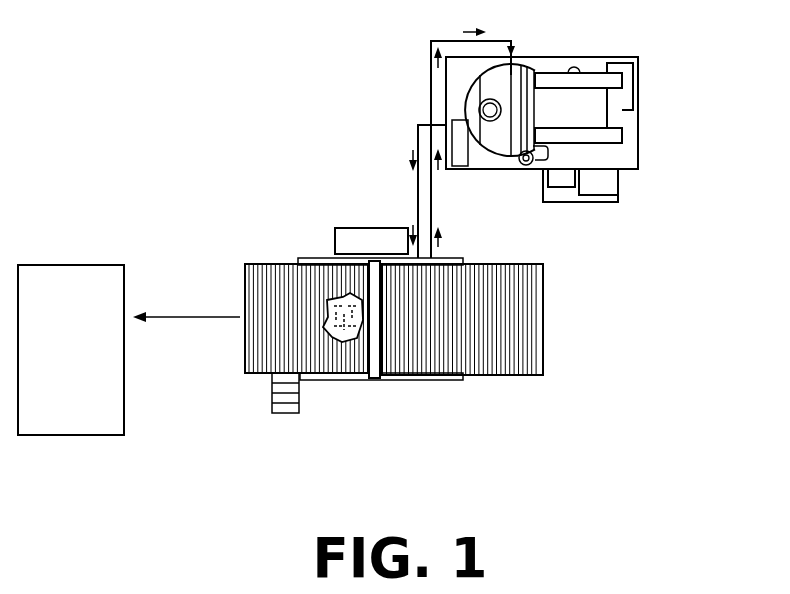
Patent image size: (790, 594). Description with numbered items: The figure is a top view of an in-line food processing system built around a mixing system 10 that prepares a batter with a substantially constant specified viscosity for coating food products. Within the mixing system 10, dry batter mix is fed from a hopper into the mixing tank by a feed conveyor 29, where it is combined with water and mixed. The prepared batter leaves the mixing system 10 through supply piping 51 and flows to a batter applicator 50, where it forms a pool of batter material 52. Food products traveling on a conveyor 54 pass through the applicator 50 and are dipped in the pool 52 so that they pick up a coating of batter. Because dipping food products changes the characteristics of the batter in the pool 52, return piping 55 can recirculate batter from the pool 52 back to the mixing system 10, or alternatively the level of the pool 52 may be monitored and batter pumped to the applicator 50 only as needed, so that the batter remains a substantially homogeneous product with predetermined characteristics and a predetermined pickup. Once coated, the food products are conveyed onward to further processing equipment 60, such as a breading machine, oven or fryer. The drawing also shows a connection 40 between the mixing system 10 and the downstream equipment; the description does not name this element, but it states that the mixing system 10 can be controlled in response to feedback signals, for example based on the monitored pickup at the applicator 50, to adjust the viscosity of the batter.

The mixing system 10 is at (602, 111).
The feed conveyor 29 is at (613, 115).
The control connection 40 is at (400, 116).
The batter applicator 50 is at (450, 316).
The supply piping 51 is at (418, 210).
The pool of batter material 52 is at (337, 298).
The conveyor 54 is at (518, 376).
The return piping 55 is at (431, 218).
The further processing equipment 60 is at (78, 263).